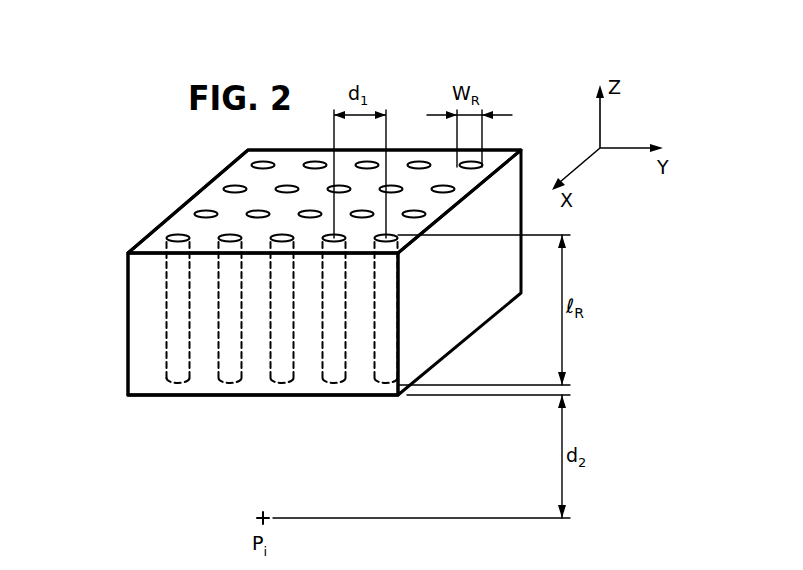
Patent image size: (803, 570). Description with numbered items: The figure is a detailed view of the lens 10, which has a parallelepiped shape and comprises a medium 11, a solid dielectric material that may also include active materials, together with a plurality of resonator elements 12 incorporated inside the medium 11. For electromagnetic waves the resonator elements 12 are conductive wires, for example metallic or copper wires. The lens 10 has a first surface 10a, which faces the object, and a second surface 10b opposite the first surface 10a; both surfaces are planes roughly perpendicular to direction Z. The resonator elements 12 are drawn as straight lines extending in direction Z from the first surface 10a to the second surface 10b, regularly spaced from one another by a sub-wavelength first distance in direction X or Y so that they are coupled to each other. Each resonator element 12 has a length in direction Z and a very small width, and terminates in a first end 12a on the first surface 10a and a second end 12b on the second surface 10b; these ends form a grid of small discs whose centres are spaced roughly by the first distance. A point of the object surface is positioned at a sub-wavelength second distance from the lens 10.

The lens 10 is at (152, 243).
The first surface 10a is at (146, 396).
The second surface 10b is at (215, 198).
The medium 11 is at (147, 357).
The resonator element 12 is at (148, 309).
The first end 12a is at (181, 385).
The second end 12b is at (173, 233).